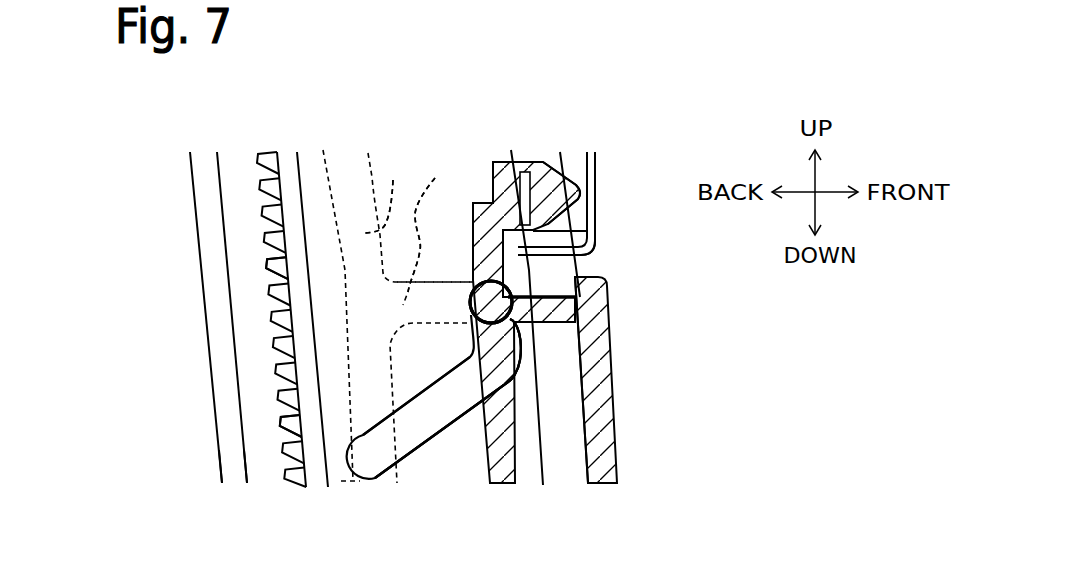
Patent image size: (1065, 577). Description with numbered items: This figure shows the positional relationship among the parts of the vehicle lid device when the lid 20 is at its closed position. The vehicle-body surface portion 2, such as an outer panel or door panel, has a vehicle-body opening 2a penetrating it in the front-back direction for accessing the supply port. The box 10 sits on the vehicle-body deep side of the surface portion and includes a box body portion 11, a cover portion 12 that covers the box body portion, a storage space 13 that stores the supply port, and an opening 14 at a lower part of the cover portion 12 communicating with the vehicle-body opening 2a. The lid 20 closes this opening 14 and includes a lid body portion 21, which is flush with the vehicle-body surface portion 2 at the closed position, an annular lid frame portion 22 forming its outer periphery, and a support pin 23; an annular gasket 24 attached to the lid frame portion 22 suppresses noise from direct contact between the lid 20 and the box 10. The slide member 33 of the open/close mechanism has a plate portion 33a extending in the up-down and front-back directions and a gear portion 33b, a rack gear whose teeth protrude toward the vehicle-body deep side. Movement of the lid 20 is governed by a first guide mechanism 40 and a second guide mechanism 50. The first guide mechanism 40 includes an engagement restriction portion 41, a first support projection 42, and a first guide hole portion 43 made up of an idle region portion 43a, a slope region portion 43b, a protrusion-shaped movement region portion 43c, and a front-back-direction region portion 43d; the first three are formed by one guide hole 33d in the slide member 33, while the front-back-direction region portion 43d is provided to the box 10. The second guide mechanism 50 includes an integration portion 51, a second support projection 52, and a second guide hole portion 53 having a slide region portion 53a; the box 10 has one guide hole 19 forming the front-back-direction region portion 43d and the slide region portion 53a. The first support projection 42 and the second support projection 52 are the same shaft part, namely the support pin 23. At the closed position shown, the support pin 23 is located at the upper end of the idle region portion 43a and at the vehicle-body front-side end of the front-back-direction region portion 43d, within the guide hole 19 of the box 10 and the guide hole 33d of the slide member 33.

The vehicle-body surface portion 2 is at (597, 172).
The vehicle-body opening 2a is at (593, 258).
The box 10 is at (188, 188).
The box body portion 11 is at (203, 218).
The cover portion 12 is at (585, 212).
The storage space 13 is at (263, 462).
The opening 14 is at (593, 247).
The guide hole 19 is at (473, 150).
The lid 20 is at (620, 477).
The lid body portion 21 is at (603, 450).
The lid frame portion 22 is at (488, 165).
The support pin 23 is at (468, 302).
The gasket 24 is at (553, 187).
The slide member 33 is at (254, 190).
The plate portion 33a is at (323, 272).
The gear portion 33b is at (280, 423).
The guide hole 33d is at (720, 303).
The first guide mechanism 40 is at (426, 358).
The engagement restriction portion 41 is at (441, 286).
The first support projection 42 is at (274, 314).
The first guide hole portion 43 is at (460, 331).
The idle region portion 43a is at (507, 330).
The slope region portion 43b is at (430, 430).
The protrusion-shaped movement region portion 43c is at (513, 350).
The front-back-direction region portion 43d is at (440, 223).
The second guide mechanism 50 is at (352, 146).
The integration portion 51 is at (362, 482).
The second support projection 52 is at (274, 314).
The second guide hole portion 53 is at (320, 152).
The slide region portion 53a is at (389, 194).